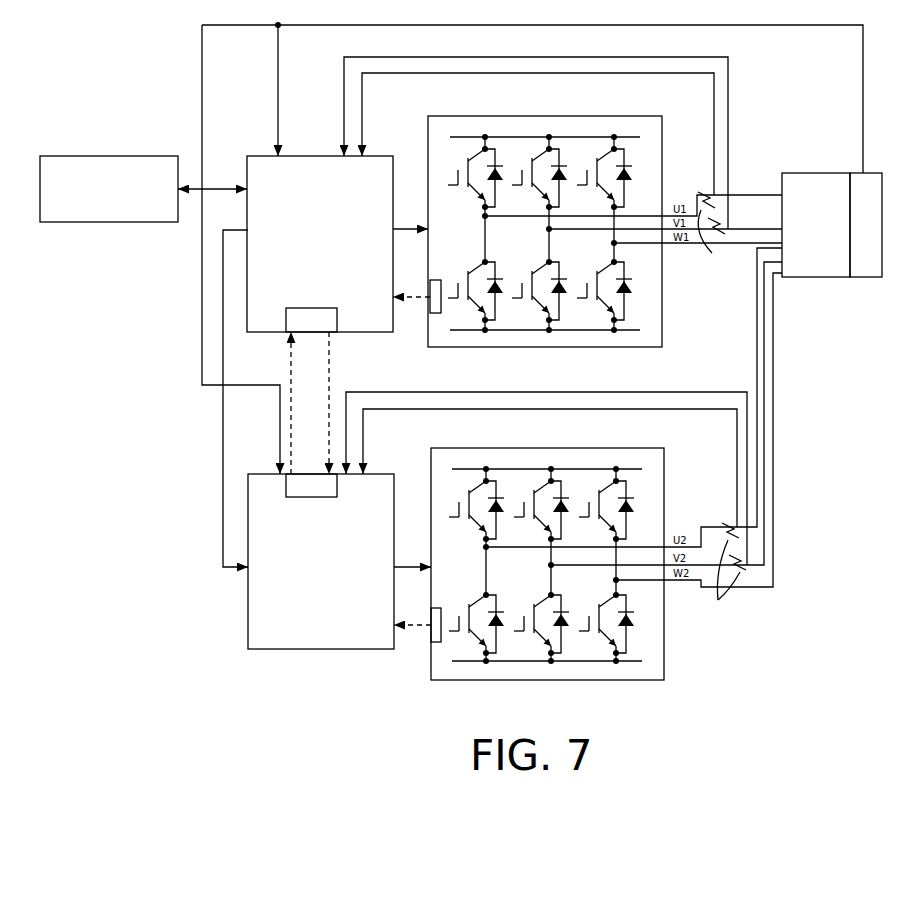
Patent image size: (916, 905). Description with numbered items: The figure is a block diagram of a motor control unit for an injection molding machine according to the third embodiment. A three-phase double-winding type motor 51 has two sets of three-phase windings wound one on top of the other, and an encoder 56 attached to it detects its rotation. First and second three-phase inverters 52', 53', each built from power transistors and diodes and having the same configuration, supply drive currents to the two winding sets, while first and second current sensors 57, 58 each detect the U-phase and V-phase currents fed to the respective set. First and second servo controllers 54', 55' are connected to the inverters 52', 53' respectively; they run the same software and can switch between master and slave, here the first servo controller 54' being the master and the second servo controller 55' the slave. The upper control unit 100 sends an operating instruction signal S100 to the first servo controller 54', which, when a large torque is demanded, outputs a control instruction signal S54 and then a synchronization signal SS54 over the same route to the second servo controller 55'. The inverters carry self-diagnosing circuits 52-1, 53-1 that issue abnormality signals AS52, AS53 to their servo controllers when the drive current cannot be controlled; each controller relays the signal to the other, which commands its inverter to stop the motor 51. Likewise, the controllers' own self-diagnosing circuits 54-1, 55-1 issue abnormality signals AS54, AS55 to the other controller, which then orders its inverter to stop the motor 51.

The upper control unit 100 is at (107, 155).
The operating instruction signal S100 is at (220, 186).
The first servo controller 54' is at (320, 209).
The self-diagnosing circuit 54-1 is at (287, 318).
The second servo controller 55' is at (321, 590).
The self-diagnosing circuit 55-1 is at (285, 490).
The first three-phase inverter 52' is at (545, 212).
The self-diagnosing circuit 52-1 is at (435, 313).
The second three-phase inverter 53' is at (547, 545).
The self-diagnosing circuit 53-1 is at (437, 642).
The three-phase double-winding type motor 51 is at (815, 173).
The encoder 56 is at (870, 277).
The first current sensors 57 is at (707, 232).
The second current sensors 58 is at (724, 575).
The abnormality signal AS52 is at (381, 385).
The abnormality signal AS53 is at (279, 530).
The abnormality signal AS54 is at (331, 433).
The abnormality signal AS55 is at (290, 405).
The control instruction signal S54 is at (181, 398).
The synchronization signal SS54 is at (224, 483).